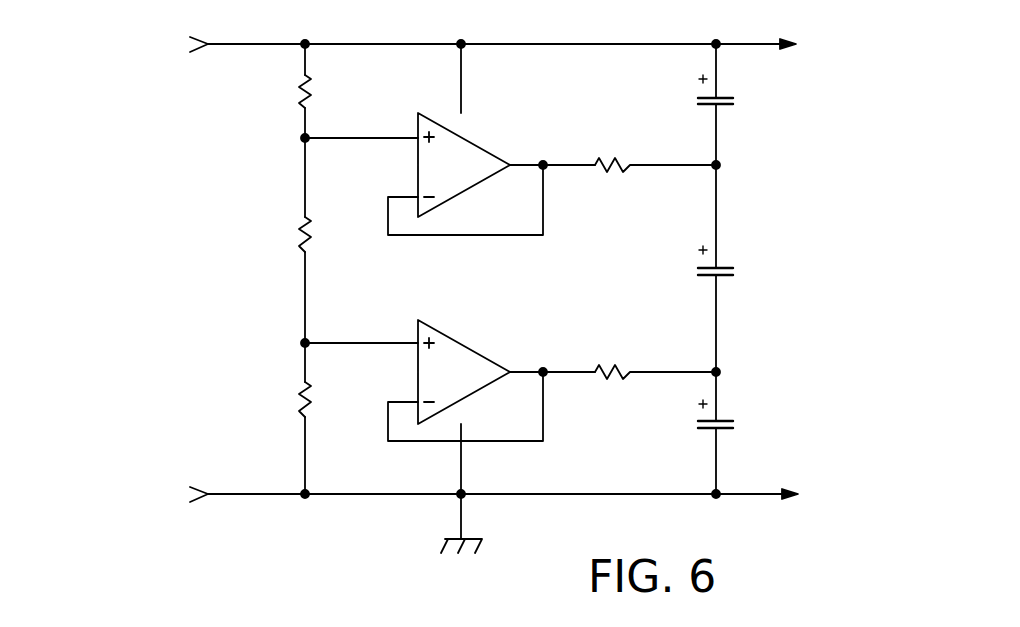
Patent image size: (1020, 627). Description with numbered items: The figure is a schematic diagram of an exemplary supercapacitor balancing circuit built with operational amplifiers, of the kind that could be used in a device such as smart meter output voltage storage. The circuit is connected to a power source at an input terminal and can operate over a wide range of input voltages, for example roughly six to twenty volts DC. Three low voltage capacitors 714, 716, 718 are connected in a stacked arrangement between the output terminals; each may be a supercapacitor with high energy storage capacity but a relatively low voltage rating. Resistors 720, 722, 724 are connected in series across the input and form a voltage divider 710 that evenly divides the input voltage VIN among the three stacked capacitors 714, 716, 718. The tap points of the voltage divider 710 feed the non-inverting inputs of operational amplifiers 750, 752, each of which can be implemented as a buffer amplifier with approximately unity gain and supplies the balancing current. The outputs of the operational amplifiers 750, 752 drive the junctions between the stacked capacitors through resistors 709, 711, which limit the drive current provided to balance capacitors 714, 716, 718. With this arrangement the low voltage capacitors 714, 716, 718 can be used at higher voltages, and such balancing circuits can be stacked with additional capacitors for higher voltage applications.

The voltage divider 710 is at (168, 173).
The resistor 720 is at (285, 84).
The resistor 722 is at (284, 240).
The resistor 724 is at (292, 406).
The operational amplifier 750 is at (428, 112).
The operational amplifier 752 is at (468, 326).
The resistor 709 is at (606, 108).
The resistor 711 is at (633, 340).
The low voltage capacitor 714 is at (733, 78).
The low voltage capacitor 716 is at (732, 244).
The low voltage capacitor 718 is at (737, 394).